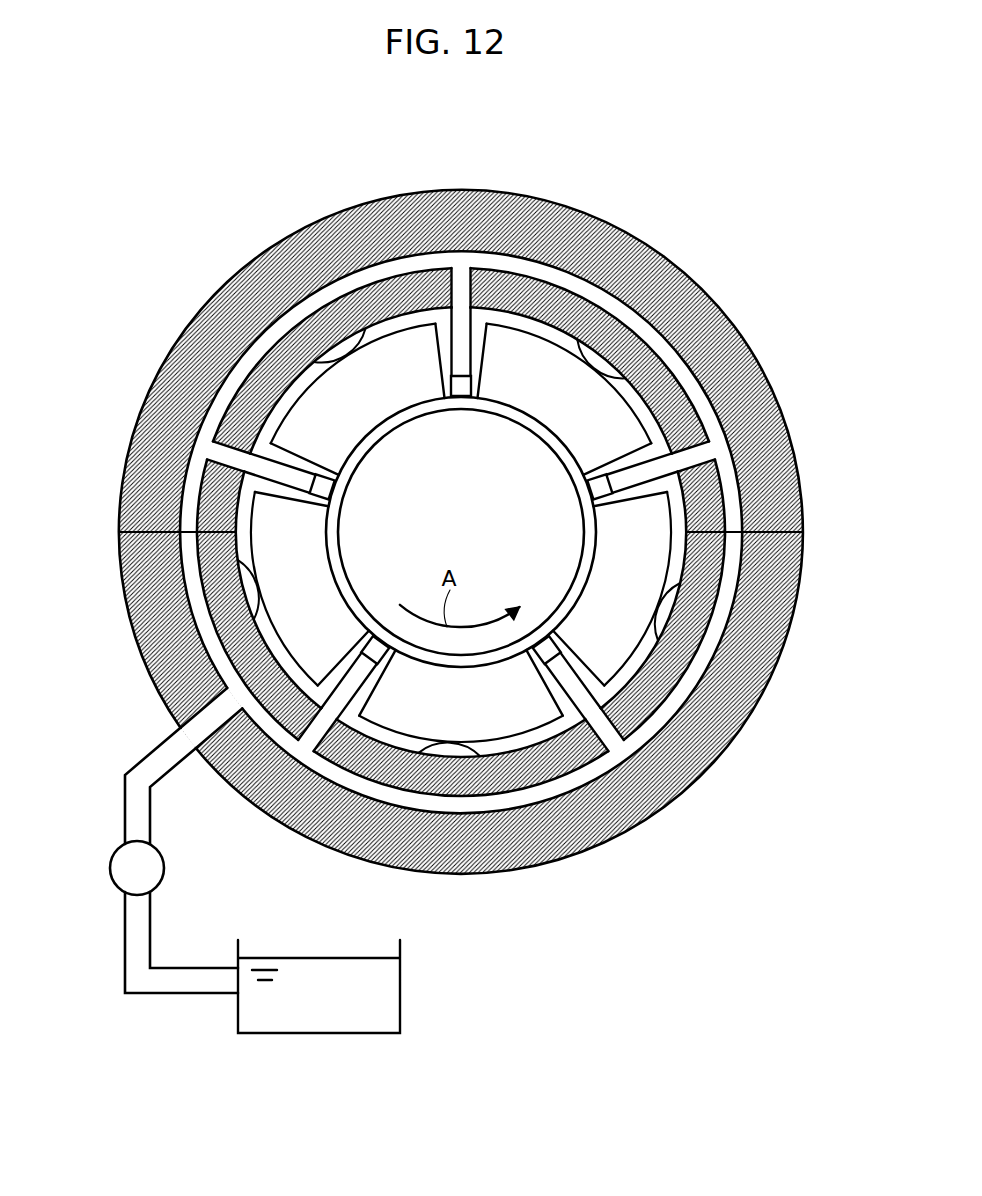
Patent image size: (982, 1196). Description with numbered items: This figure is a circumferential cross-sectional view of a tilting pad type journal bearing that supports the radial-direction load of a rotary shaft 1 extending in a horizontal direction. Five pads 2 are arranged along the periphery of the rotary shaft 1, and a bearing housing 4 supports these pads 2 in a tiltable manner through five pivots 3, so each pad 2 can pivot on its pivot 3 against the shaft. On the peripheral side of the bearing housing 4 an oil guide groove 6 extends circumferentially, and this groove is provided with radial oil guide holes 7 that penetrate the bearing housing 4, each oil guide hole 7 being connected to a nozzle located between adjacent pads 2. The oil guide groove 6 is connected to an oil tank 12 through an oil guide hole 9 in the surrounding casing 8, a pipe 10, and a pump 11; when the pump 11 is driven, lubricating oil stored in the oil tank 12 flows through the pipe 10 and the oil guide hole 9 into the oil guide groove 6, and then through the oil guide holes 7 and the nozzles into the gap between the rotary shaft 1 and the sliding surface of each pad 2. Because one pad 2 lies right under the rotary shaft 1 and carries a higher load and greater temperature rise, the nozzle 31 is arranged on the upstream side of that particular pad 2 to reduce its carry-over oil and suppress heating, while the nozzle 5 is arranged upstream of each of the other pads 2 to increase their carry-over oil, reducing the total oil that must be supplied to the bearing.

The rotary shaft 1 is at (457, 557).
The pad 2 is at (377, 343).
The pivot 3 is at (335, 350).
The bearing housing 4 is at (283, 337).
The nozzle 5 is at (462, 350).
The oil guide groove 6 is at (510, 810).
The oil guide hole 7 is at (467, 290).
The casing 8 is at (380, 210).
The oil guide hole 9 is at (190, 728).
The pipe 10 is at (165, 768).
The pump 11 is at (163, 870).
The oil tank 12 is at (400, 995).
The nozzle 31 is at (350, 688).